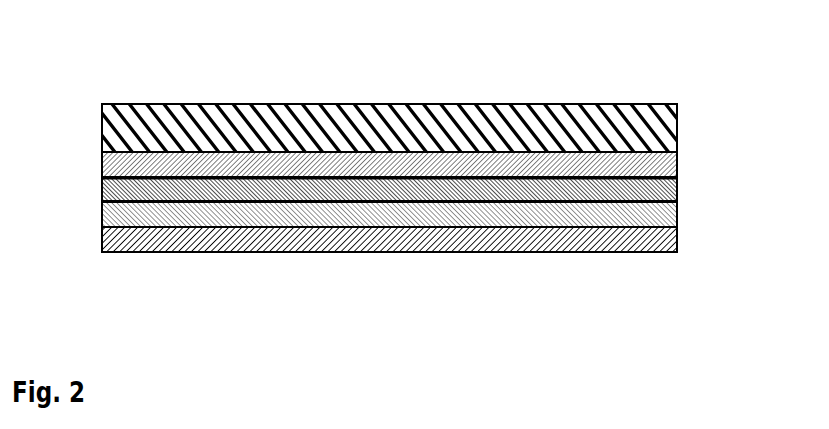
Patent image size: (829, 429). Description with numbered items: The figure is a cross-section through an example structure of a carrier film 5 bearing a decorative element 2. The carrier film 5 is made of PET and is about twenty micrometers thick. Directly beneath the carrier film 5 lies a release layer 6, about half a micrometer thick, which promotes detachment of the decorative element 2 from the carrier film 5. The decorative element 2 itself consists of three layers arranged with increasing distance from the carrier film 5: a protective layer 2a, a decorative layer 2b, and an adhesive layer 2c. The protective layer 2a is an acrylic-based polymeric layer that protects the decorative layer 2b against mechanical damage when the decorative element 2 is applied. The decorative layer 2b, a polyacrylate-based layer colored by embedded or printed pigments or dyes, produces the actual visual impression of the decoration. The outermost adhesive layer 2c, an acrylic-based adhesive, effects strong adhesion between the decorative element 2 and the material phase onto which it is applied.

The decorative element 2 is at (412, 250).
The protective layer 2a is at (677, 191).
The decorative layer 2b is at (668, 217).
The adhesive layer 2c is at (672, 250).
The carrier film 5 is at (583, 128).
The release layer 6 is at (667, 163).